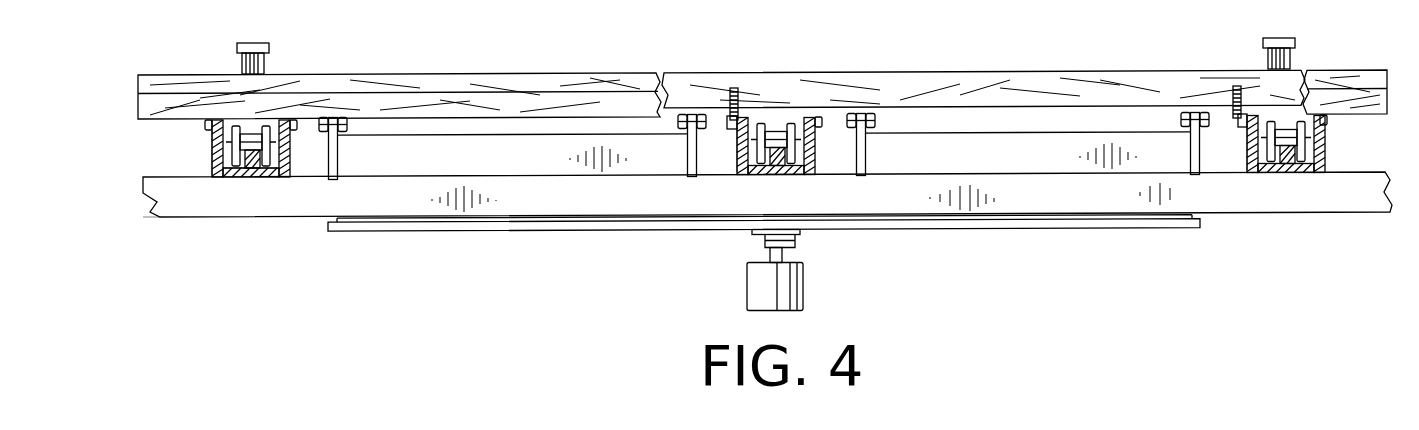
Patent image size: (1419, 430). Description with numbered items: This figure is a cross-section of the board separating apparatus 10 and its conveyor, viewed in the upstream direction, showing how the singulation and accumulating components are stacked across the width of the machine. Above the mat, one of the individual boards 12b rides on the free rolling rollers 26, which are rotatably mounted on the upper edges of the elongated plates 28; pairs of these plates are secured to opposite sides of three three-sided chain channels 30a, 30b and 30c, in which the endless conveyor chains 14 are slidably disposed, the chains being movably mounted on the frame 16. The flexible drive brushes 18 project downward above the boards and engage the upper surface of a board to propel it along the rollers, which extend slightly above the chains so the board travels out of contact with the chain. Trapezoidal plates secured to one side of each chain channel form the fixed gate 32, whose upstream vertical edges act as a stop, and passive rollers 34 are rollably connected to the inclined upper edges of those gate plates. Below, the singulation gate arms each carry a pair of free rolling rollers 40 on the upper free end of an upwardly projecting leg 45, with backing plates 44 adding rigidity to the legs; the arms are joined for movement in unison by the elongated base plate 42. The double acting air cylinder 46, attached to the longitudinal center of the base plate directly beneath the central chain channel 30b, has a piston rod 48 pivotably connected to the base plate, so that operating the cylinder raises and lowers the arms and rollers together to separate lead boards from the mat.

The apparatus 10 is at (1038, 246).
The board 12b is at (432, 73).
The endless chains 14 is at (250, 132).
The frame 16 is at (1252, 200).
The drive brushes 18 is at (265, 63).
The rollers 26 is at (296, 118).
The elongated plates 28 is at (294, 152).
The chain channel 30a is at (276, 178).
The chain channel 30b is at (748, 178).
The chain channel 30c is at (1294, 175).
The fixed gate 32 is at (212, 163).
The rollers 34 is at (212, 128).
The rollers 40 is at (344, 118).
The base plate 42 is at (328, 232).
The backing plates 44 is at (516, 135).
The upwardly projecting leg 45 is at (690, 160).
The double acting air cylinder 46 is at (805, 292).
The piston rod 48 is at (792, 258).